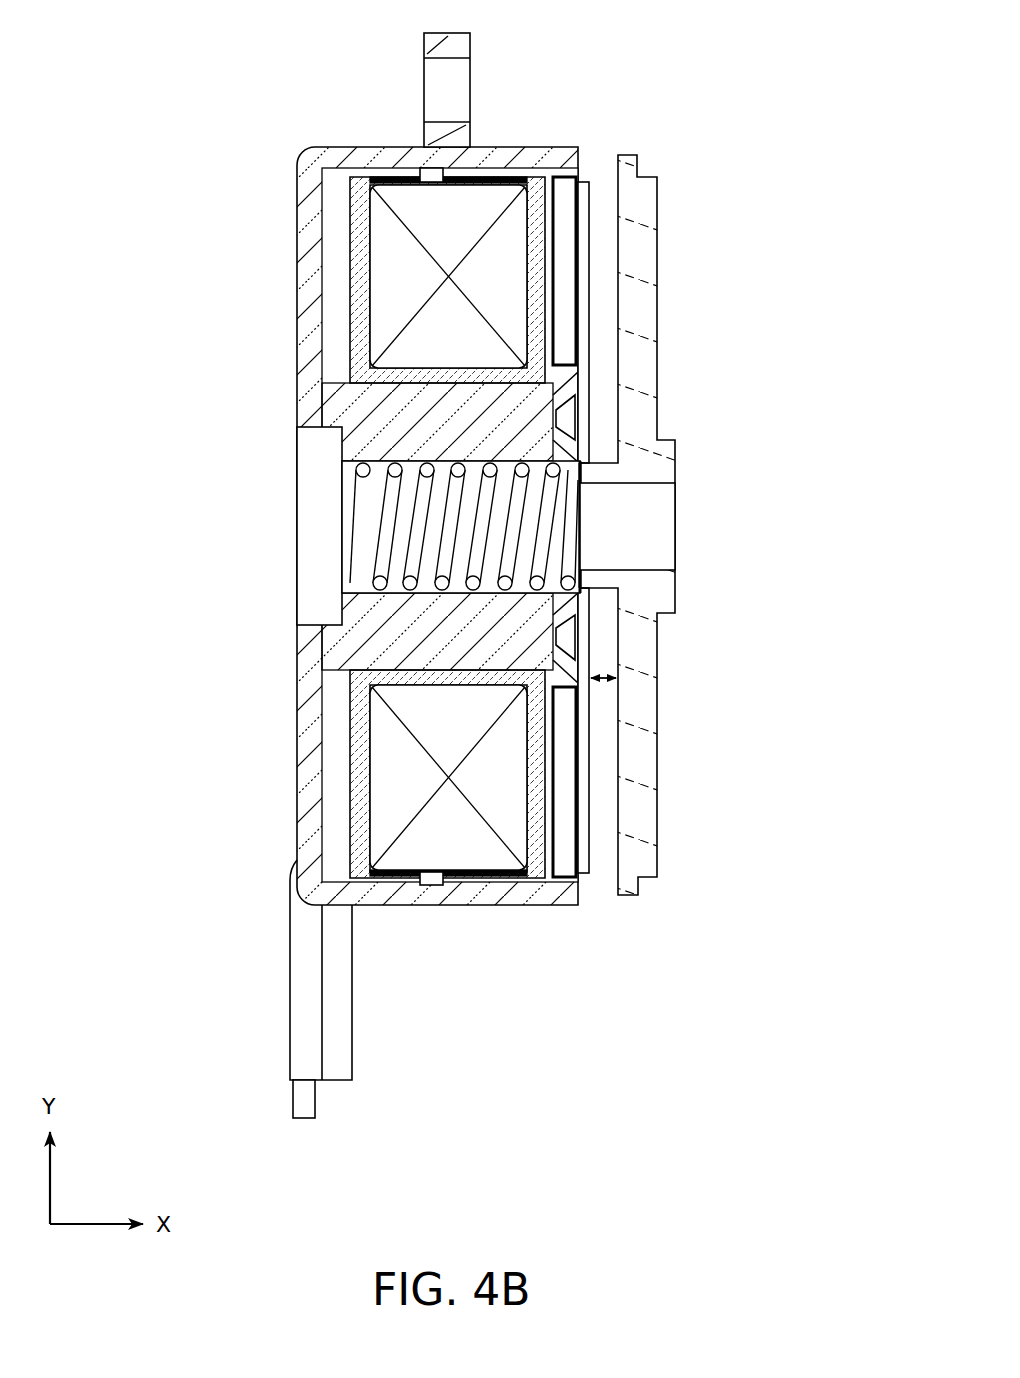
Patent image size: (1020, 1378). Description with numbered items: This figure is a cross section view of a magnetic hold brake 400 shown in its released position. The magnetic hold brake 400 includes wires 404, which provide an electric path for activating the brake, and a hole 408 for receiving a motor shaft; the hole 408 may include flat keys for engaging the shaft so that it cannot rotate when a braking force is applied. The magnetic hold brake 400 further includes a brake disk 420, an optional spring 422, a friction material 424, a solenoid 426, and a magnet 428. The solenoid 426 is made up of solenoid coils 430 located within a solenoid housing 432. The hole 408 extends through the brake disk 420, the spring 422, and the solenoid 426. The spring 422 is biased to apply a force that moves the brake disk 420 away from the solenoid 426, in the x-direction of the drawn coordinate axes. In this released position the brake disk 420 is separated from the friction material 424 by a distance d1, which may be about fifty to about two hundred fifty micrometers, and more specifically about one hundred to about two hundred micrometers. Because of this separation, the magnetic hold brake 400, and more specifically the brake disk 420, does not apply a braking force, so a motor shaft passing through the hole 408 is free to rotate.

The magnetic hold brake 400 is at (248, 83).
The wires 404 is at (297, 1018).
The hole 408 is at (685, 557).
The brake disk 420 is at (645, 318).
The spring 422 is at (560, 536).
The friction material 424 is at (592, 200).
The solenoid 426 is at (503, 772).
The magnet 428 is at (432, 178).
The solenoid coils 430 is at (420, 860).
The solenoid housing 432 is at (557, 866).
The distance d1 is at (606, 678).